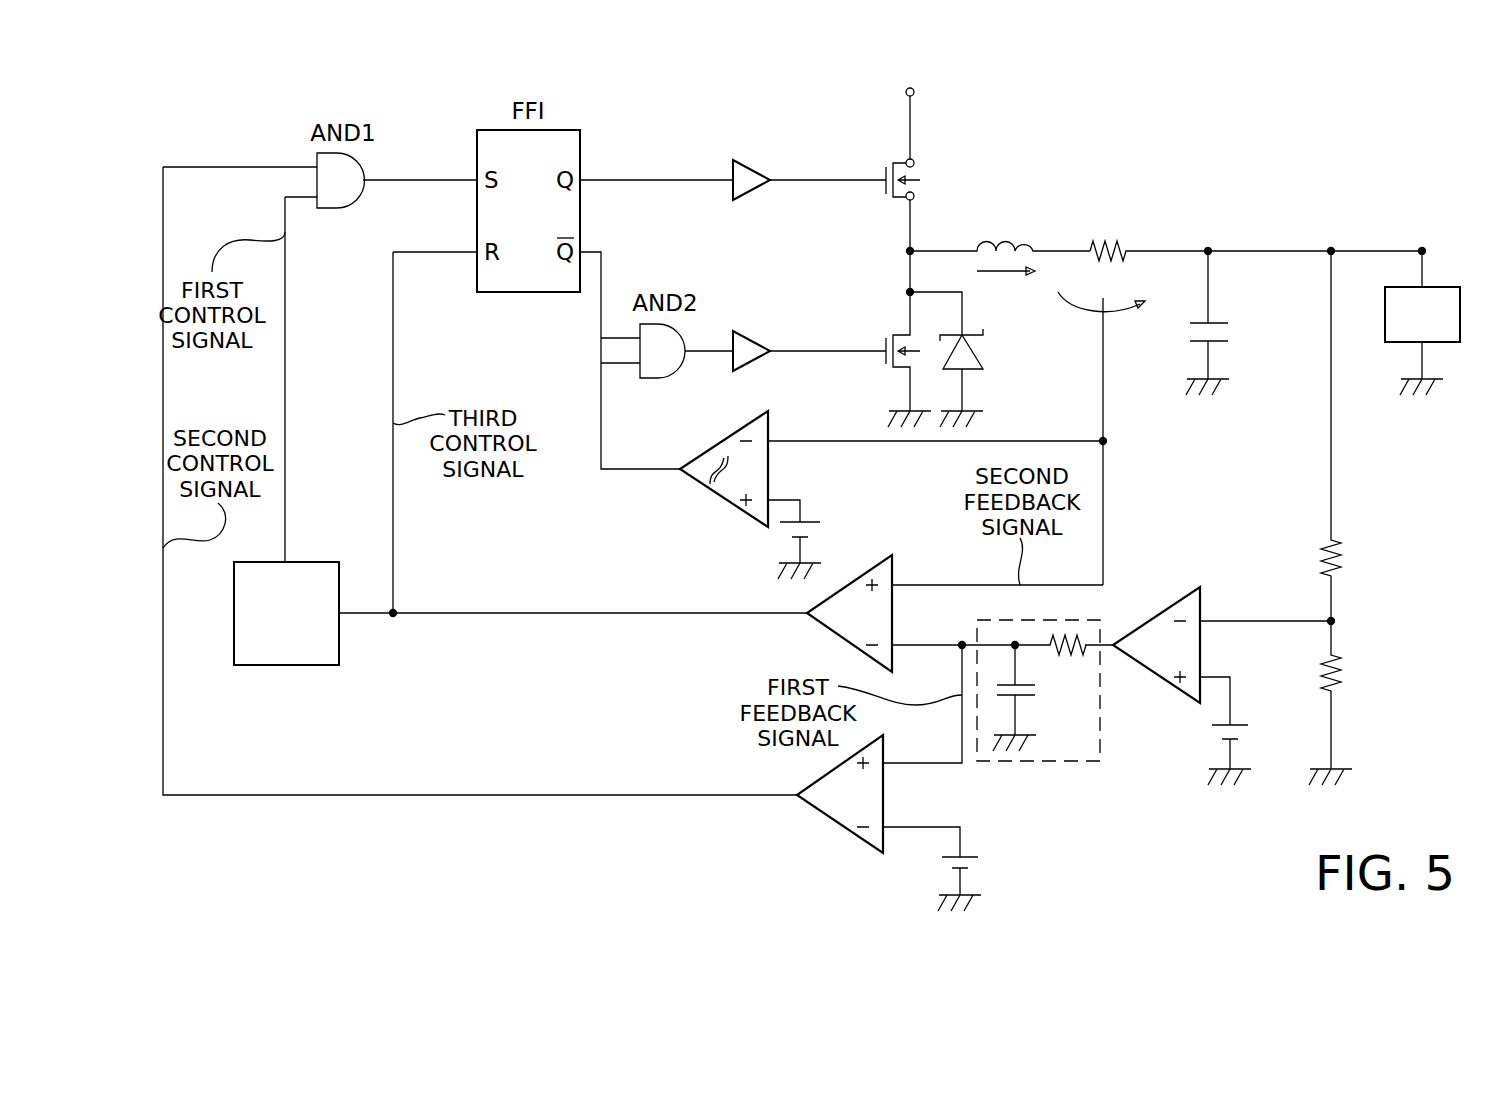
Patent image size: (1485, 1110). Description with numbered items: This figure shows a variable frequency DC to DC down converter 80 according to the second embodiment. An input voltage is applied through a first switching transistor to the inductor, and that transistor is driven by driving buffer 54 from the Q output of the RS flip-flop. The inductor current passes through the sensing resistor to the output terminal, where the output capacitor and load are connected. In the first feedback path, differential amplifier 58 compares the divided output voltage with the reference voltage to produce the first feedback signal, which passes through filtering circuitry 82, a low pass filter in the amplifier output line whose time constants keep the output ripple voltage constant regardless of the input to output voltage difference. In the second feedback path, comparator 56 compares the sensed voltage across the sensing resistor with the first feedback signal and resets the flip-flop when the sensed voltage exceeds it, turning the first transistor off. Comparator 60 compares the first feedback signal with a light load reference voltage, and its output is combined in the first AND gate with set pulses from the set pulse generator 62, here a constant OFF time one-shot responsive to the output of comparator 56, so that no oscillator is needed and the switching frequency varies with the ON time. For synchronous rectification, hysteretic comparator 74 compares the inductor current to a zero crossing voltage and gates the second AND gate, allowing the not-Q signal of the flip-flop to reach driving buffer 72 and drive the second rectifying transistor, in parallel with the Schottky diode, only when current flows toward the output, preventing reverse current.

The driving buffer 54 is at (748, 160).
The driving buffer 72 is at (753, 333).
The hysteretic comparator 74 is at (727, 505).
The comparator 56 is at (818, 627).
The differential amplifier 58 is at (1166, 688).
The comparator 60 is at (838, 822).
The set pulse generator 62 is at (312, 657).
The variable frequency DC to DC down converter 80 is at (1107, 140).
The filtering circuitry 82 is at (1050, 762).